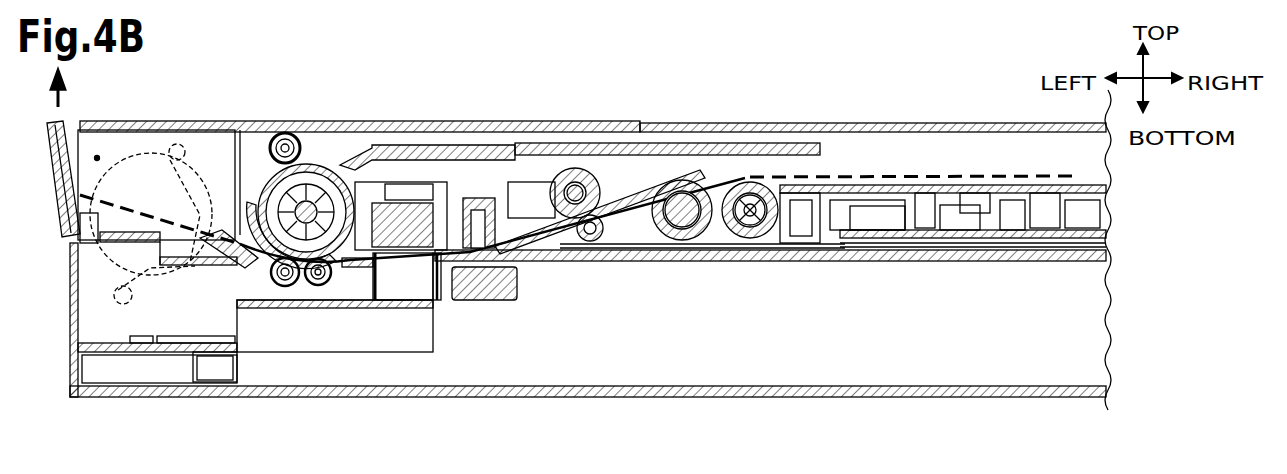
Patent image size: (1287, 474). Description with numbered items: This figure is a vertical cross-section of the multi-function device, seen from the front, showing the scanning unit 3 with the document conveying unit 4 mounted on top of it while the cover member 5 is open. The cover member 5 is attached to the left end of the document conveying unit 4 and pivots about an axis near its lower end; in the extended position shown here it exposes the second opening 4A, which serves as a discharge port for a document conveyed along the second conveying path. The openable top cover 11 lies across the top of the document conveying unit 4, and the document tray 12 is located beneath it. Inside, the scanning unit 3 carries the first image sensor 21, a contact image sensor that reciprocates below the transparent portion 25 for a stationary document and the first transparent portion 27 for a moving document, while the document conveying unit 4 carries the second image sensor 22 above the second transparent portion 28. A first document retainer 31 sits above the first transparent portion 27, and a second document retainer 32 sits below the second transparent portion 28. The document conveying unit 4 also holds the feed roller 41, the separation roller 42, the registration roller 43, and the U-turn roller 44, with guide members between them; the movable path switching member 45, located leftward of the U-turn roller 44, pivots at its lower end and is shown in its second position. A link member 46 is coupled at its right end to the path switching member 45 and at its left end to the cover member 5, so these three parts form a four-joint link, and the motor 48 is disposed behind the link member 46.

The scanning unit 3 is at (586, 0).
The document conveying unit 4 is at (583, 121).
The second opening 4A is at (97, 156).
The cover member 5 is at (46, 124).
The top cover 11 is at (990, 123).
The document tray 12 is at (1078, 187).
The first image sensor 21 is at (485, 302).
The second image sensor 22 is at (405, 205).
The transparent portion for a stationary document 25 is at (635, 261).
The first transparent portion 27 is at (441, 268).
The second transparent portion 28 is at (378, 205).
The first document retainer 31 is at (488, 243).
The second document retainer 32 is at (400, 262).
The feed roller 41 is at (746, 241).
The separation roller 42 is at (683, 243).
The registration roller 43 is at (591, 250).
The U-turn roller 44 is at (310, 210).
The path switching member 45 is at (258, 269).
The link member 46 is at (212, 237).
The motor 48 is at (193, 277).